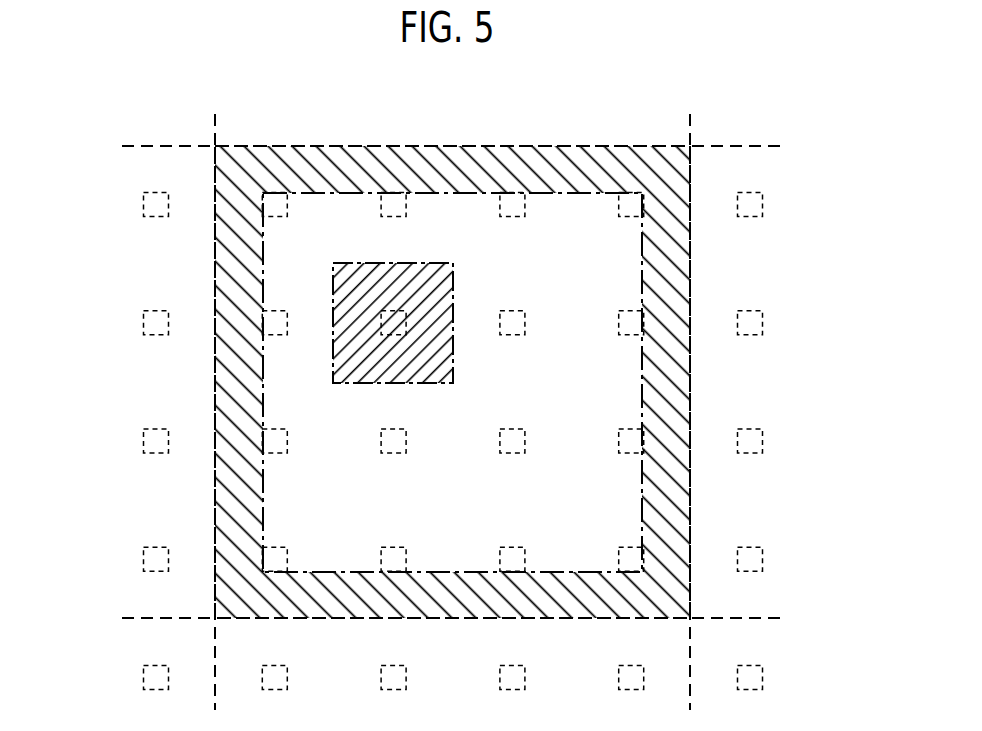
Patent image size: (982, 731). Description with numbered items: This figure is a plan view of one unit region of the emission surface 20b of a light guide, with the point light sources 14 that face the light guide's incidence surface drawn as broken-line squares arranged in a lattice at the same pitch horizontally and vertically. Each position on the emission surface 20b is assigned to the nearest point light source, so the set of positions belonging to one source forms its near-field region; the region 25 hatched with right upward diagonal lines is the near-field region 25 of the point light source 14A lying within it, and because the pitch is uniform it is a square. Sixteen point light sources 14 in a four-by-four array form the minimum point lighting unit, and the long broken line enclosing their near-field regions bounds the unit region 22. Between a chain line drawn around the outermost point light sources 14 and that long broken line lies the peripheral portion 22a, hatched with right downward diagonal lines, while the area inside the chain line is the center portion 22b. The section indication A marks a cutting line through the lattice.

The point light source 14 is at (277, 207).
The point light source 14A is at (382, 323).
The emission surface 20b is at (733, 124).
The unit region 22 is at (452, 336).
The peripheral portion 22a is at (520, 166).
The center portion 22b is at (465, 204).
The near-field region 25 is at (348, 283).
The section line A- A is at (134, 321).